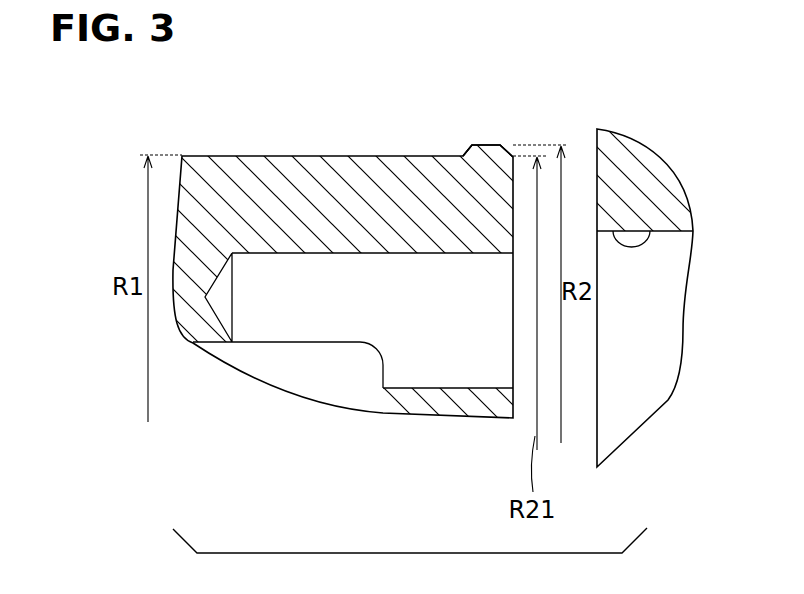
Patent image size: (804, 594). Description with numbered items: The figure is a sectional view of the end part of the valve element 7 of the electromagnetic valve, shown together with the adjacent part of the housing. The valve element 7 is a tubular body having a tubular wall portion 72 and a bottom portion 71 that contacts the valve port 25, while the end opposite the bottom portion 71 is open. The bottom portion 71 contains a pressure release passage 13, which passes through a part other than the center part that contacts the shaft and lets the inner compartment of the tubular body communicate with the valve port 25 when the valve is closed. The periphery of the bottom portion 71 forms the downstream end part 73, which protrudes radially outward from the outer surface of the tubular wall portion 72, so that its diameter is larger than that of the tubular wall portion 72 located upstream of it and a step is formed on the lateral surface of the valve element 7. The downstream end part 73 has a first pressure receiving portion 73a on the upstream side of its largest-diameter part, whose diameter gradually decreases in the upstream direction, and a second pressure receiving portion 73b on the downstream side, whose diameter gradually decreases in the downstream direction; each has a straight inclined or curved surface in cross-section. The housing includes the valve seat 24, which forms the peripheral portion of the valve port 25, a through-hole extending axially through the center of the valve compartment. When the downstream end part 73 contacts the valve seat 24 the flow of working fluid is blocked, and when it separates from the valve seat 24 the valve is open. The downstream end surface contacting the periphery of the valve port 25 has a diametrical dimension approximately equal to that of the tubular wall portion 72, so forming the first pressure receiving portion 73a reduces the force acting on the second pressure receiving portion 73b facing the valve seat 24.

The valve element 7 is at (357, 274).
The tubular wall portion 72 is at (263, 172).
The bottom portion 71 is at (450, 406).
The downstream end part 73 is at (485, 115).
The first pressure receiving portion 73a is at (463, 146).
The second pressure receiving portion 73b is at (513, 144).
The pressure release passage 13 is at (488, 254).
The valve seat 24 is at (652, 277).
The valve port 25 is at (652, 229).